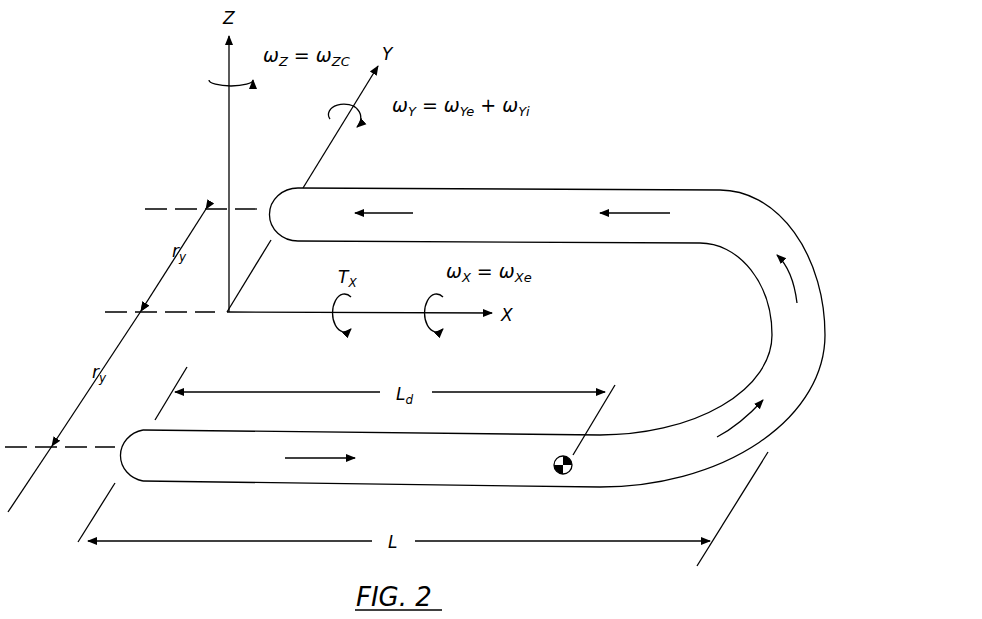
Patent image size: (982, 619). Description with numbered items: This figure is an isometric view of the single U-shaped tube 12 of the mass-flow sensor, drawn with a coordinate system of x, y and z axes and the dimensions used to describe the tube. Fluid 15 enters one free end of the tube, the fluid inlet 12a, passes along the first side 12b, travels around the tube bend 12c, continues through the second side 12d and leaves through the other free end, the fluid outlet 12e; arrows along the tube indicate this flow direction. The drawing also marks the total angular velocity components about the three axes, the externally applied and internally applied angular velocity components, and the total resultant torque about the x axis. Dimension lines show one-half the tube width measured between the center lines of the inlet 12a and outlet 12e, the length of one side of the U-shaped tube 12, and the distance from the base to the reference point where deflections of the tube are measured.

The U-shaped tube 12 is at (460, 279).
The fluid inlet 12a is at (128, 458).
The first side 12b is at (385, 487).
The tube bend 12c is at (813, 291).
The second side 12d is at (587, 193).
The fluid outlet 12e is at (291, 190).
The fluid 15 is at (412, 213).